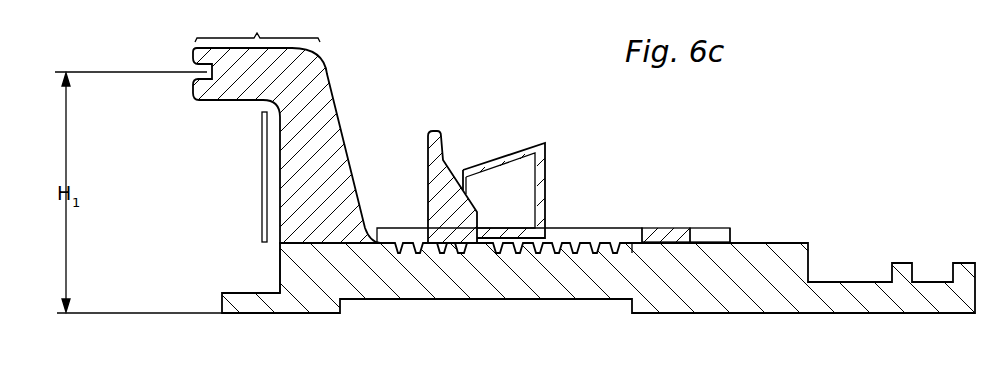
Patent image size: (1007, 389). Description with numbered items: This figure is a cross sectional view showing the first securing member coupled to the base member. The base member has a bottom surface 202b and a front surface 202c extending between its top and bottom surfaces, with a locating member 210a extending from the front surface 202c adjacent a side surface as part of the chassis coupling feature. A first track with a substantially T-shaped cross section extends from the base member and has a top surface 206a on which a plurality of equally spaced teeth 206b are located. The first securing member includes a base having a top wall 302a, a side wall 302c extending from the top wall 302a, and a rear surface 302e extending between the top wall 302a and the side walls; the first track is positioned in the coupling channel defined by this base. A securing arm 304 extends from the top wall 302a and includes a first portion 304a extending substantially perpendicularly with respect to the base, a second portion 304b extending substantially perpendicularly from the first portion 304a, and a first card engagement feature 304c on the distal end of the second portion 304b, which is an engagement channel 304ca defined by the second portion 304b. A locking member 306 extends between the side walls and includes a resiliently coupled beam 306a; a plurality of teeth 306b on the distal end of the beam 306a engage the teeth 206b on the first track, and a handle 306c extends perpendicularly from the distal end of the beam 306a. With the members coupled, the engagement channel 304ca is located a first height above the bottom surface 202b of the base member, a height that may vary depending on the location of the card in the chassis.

The bottom surface 202b is at (318, 313).
The front surface 202c is at (278, 270).
The top surface 206a is at (374, 228).
The teeth 206b is at (590, 228).
The locating member 210a is at (222, 305).
The top wall 302a is at (664, 226).
The side wall 302c is at (718, 228).
The rear surface 302e is at (733, 232).
The securing arm 304 is at (325, 72).
The first portion 304a is at (261, 172).
The second portion 304b is at (257, 25).
The first card engagement feature 304c is at (177, 62).
The engagement channel 304ca is at (192, 82).
The locking member 306 is at (490, 141).
The beam 306a is at (508, 228).
The teeth 306b is at (470, 252).
The handle 306c is at (431, 129).